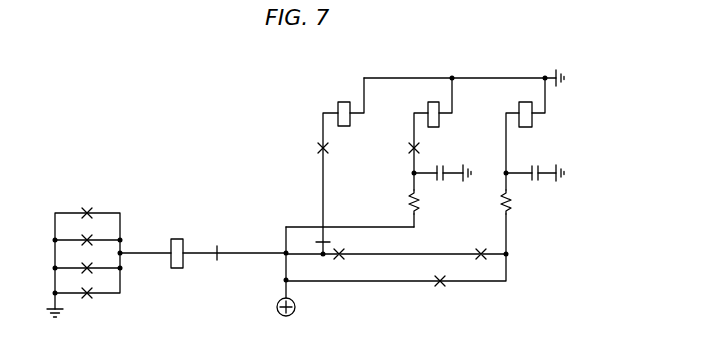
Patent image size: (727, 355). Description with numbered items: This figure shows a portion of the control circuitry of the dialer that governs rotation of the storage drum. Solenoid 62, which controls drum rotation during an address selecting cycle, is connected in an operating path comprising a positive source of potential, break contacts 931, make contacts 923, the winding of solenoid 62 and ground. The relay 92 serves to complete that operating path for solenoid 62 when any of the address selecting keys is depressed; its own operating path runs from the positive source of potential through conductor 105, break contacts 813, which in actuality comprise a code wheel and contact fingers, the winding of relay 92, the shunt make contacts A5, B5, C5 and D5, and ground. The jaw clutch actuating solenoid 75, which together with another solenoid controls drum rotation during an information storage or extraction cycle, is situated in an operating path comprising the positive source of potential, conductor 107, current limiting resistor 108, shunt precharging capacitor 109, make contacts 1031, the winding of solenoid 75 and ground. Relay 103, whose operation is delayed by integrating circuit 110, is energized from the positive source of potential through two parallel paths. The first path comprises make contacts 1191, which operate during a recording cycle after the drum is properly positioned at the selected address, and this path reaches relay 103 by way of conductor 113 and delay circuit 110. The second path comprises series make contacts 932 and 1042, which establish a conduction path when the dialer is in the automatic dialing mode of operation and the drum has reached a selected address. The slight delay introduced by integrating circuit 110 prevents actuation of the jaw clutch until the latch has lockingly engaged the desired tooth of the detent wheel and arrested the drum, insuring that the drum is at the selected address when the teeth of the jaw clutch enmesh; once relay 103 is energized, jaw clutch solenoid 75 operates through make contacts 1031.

The shunt make contacts D5 is at (87, 211).
The shunt make contacts C5 is at (87, 238).
The shunt make contacts B5 is at (87, 266).
The shunt make contacts A5 is at (87, 291).
The relay 92 is at (175, 239).
The break contacts 813 is at (236, 245).
The conductor 105 is at (240, 258).
The solenoid 62 is at (345, 101).
The jaw clutch actuating solenoid 75 is at (429, 101).
The relay 103 is at (519, 101).
The make contacts 923 is at (316, 148).
The make contacts 1031 is at (408, 148).
The shunt precharging capacitor 109 is at (440, 165).
The conductor 107 is at (382, 225).
The current limiting resistor 108 is at (420, 198).
The integrating circuit 110 is at (512, 185).
The break contacts 931 is at (332, 243).
The make contacts 932 is at (343, 257).
The make contacts 1042 is at (482, 250).
The make contacts 1191 is at (441, 288).
The conductor 113 is at (489, 284).